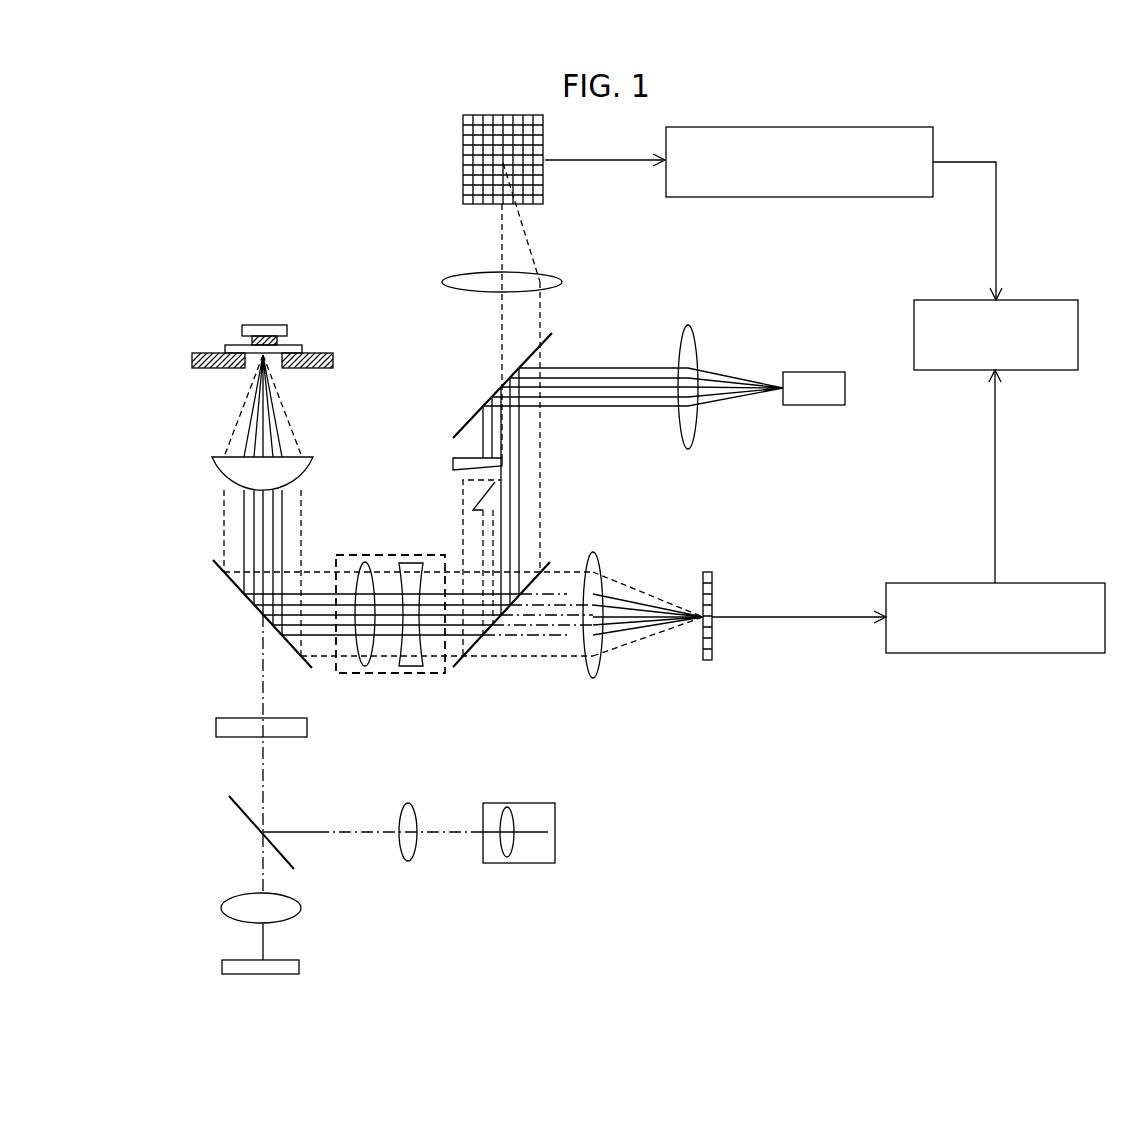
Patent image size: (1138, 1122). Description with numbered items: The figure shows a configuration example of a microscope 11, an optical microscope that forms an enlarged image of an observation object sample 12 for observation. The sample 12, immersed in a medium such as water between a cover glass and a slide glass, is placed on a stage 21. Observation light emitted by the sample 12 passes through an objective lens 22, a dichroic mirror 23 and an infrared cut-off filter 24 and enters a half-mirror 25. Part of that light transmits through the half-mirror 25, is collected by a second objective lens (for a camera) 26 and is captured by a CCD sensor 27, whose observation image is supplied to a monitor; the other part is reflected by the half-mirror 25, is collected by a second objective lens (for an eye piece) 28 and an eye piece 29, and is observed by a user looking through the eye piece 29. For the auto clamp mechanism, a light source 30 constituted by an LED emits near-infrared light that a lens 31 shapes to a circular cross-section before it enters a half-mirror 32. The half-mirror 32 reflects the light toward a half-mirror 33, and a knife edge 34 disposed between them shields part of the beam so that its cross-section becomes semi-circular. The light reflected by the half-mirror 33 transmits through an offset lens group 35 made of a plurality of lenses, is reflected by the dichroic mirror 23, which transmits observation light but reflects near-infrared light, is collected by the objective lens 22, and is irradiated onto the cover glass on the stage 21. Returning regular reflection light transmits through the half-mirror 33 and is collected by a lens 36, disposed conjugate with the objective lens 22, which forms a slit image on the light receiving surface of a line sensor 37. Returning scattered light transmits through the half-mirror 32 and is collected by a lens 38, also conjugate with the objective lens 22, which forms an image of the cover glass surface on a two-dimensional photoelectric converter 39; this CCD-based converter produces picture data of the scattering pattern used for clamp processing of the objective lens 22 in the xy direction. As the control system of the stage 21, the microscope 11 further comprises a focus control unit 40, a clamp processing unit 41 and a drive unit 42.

The microscope 11 is at (672, 903).
The sample 12 is at (252, 340).
The stage 21 is at (192, 360).
The objective lens 22 is at (212, 468).
The dichroic mirror 23 is at (230, 586).
The infrared cut-off filter 24 is at (216, 728).
The half-mirror 25 is at (246, 816).
The second objective lens (for a camera) 26 is at (221, 907).
The CCD sensor 27 is at (222, 967).
The second objective lens (for an eye piece) 28 is at (408, 862).
The eye piece 29 is at (518, 863).
The light source 30 is at (815, 372).
The lens 31 is at (688, 325).
The half-mirror 32 is at (468, 421).
The half-mirror 33 is at (456, 672).
The knife edge 34 is at (453, 463).
The offset lens group 35 is at (387, 673).
The lens 36 is at (593, 680).
The line sensor 37 is at (708, 660).
The lens 38 is at (443, 282).
The two-dimensional photoelectric converter 39 is at (463, 160).
The focus control unit 40 is at (995, 653).
The clamp processing unit 41 is at (798, 197).
The drive unit 42 is at (1078, 335).